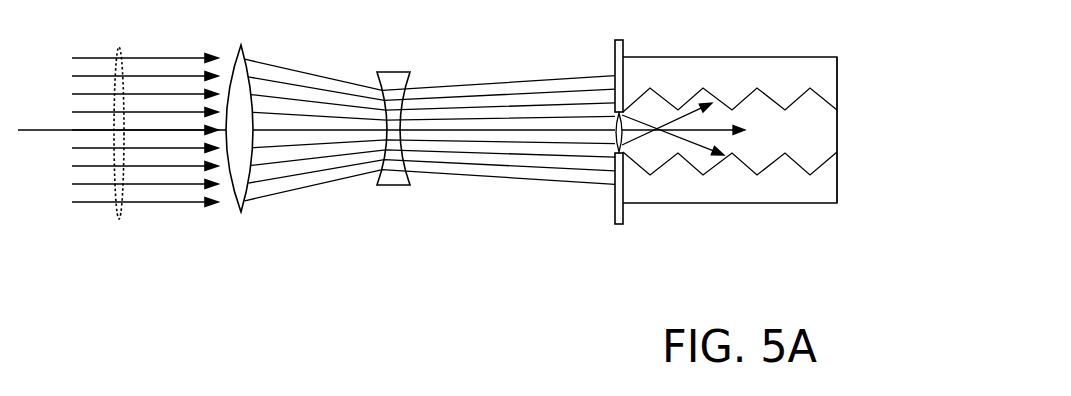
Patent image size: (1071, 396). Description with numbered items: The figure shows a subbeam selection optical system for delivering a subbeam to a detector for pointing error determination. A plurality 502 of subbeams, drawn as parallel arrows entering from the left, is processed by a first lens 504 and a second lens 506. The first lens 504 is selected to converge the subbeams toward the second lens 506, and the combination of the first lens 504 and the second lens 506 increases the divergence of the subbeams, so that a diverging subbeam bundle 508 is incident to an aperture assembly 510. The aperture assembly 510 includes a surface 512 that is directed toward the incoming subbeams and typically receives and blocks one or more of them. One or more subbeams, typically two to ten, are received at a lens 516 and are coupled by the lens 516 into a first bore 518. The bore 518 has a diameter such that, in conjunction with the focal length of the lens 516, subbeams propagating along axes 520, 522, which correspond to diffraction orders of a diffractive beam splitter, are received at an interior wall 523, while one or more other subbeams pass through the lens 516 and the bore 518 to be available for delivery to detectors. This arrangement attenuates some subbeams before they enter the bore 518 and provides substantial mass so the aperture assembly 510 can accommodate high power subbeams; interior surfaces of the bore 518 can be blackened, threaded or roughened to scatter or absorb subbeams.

The plurality of subbeams 502 is at (120, 45).
The first lens 504 is at (241, 212).
The second lens 506 is at (393, 186).
The diverging subbeam bundle 508 is at (514, 203).
The aperture assembly 510 is at (803, 202).
The surface 512 is at (613, 226).
The lens 516 is at (623, 112).
The first bore 518 is at (837, 137).
The axis 520 is at (656, 129).
The axis 522 is at (656, 129).
The interior wall 523 is at (815, 96).